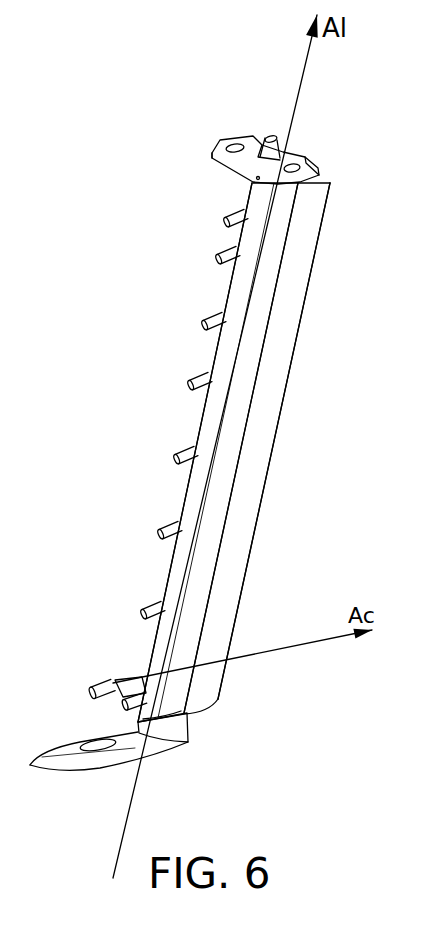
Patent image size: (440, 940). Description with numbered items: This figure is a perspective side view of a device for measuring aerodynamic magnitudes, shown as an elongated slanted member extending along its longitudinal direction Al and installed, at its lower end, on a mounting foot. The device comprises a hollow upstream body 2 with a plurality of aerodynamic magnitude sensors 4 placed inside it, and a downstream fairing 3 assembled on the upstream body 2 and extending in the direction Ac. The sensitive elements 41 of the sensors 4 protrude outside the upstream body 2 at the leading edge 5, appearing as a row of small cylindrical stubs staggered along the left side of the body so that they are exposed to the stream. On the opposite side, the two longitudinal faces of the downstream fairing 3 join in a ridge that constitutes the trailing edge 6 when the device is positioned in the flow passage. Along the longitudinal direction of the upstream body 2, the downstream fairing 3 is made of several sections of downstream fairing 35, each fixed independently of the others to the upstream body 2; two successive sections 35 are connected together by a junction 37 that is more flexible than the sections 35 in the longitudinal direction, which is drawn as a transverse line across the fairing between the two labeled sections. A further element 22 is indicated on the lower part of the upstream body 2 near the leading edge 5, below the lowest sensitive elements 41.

The upstream body 2 is at (254, 183).
The downstream fairing 3 is at (342, 202).
The aerodynamic magnitude sensors 4 is at (168, 359).
The leading edge 5 is at (165, 502).
The trailing edge 6 is at (263, 551).
The connecting element 22 is at (151, 582).
The sections of downstream fairing 35 is at (292, 307).
The junction 37 is at (292, 353).
The sensitive elements 41 is at (214, 258).